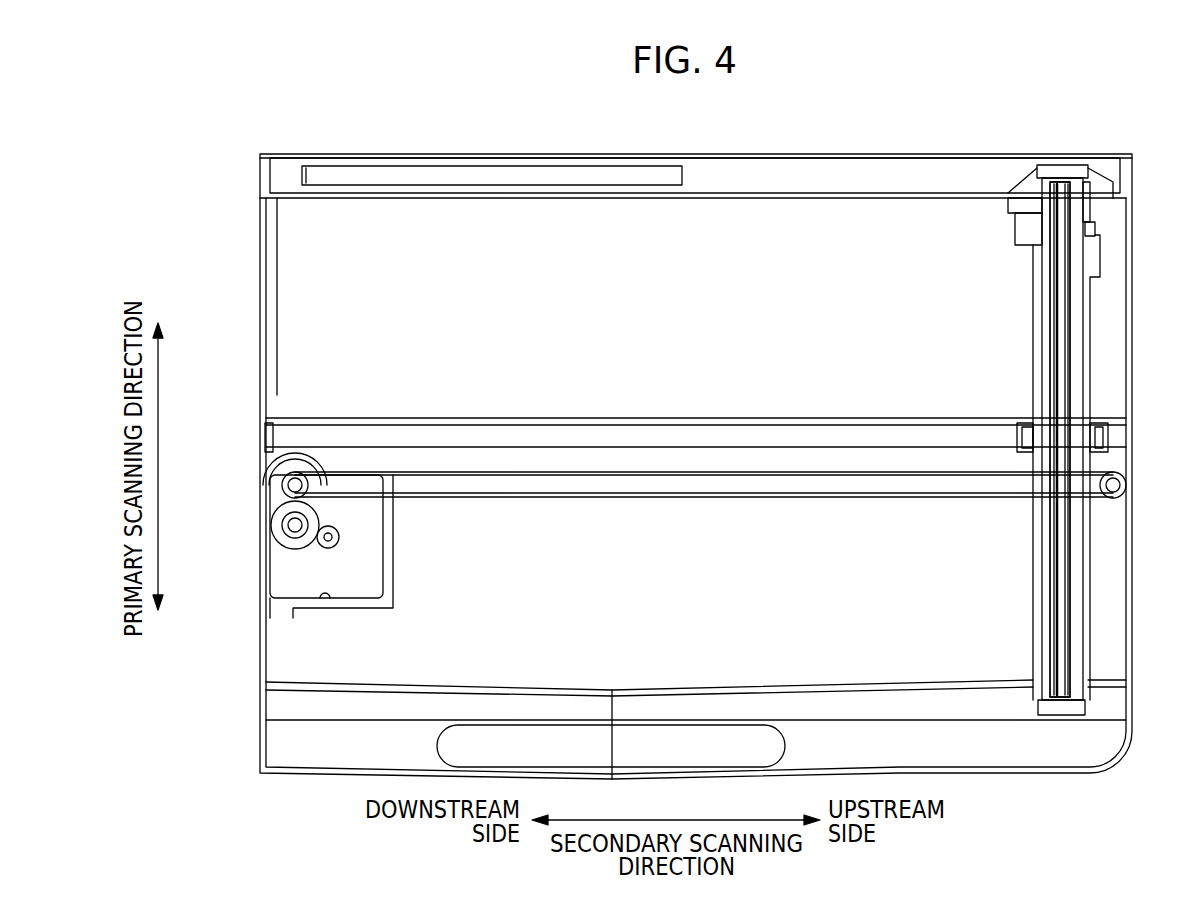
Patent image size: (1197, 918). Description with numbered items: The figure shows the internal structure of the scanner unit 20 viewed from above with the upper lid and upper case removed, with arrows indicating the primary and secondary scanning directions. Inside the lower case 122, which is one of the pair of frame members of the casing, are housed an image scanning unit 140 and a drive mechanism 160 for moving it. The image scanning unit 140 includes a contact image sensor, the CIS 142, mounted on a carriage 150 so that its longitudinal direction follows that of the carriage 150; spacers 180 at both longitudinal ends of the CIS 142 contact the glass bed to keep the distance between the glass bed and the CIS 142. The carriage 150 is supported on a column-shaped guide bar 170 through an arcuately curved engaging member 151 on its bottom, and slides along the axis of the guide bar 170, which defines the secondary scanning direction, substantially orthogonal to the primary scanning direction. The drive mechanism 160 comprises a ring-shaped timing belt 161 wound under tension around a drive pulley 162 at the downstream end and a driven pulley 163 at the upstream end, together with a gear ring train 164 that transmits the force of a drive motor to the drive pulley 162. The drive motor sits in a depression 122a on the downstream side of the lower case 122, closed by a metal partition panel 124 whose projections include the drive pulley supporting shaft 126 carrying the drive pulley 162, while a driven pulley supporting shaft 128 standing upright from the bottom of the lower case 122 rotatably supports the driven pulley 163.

The scanner unit 20 is at (944, 142).
The lower case 122 is at (775, 172).
The depression 122a is at (393, 585).
The partition panel 124 is at (290, 577).
The drive pulley supporting shaft 126 is at (285, 497).
The driven pulley supporting shaft 128 is at (1115, 492).
The image scanning unit 140 is at (980, 432).
The CIS 142 is at (1050, 290).
The carriage 150 is at (1018, 228).
The engaging member 151 is at (1020, 435).
The drive mechanism 160 is at (703, 510).
The timing belt 161 is at (812, 498).
The drive pulley 162 is at (280, 480).
The driven pulley 163 is at (1127, 483).
The gear ring train 164 is at (340, 514).
The guide bar 170 is at (648, 437).
The spacers 180 is at (1062, 165).